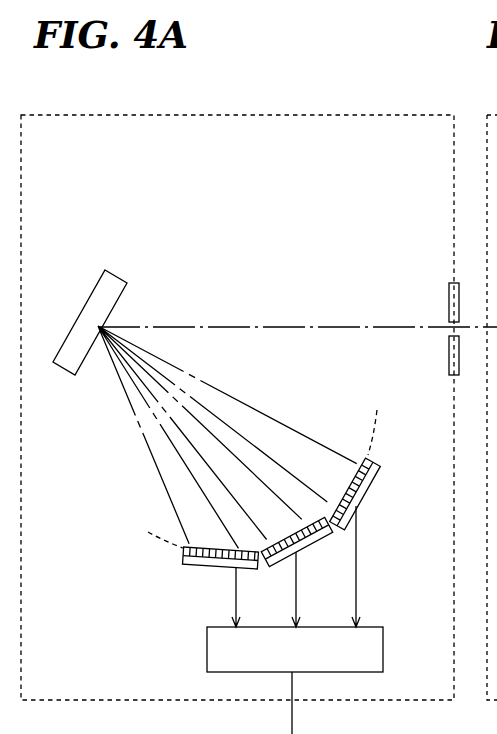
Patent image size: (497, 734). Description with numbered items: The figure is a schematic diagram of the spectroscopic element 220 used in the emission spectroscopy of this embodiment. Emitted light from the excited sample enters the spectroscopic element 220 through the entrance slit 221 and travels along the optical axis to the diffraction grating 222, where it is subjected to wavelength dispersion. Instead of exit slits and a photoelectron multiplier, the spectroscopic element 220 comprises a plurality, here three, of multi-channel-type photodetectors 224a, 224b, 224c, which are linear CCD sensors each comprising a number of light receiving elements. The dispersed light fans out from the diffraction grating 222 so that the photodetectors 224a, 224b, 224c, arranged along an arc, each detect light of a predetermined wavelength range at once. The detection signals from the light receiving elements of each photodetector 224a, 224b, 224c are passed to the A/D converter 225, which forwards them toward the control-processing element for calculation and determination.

The spectroscopic element 220 is at (148, 100).
The entrance slit 221 is at (447, 323).
The diffraction grating 222 is at (95, 285).
The multi-channel-type photodetector 224a is at (202, 570).
The multi-channel-type photodetector 224b is at (307, 542).
The multi-channel-type photodetector 224c is at (363, 492).
The A/D converter 225 is at (207, 650).